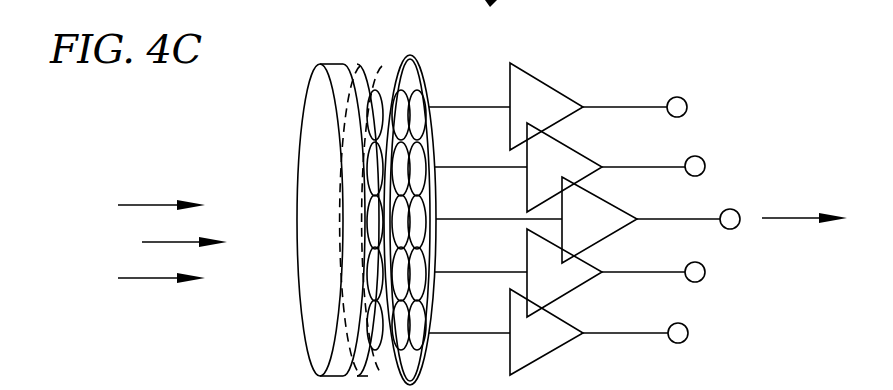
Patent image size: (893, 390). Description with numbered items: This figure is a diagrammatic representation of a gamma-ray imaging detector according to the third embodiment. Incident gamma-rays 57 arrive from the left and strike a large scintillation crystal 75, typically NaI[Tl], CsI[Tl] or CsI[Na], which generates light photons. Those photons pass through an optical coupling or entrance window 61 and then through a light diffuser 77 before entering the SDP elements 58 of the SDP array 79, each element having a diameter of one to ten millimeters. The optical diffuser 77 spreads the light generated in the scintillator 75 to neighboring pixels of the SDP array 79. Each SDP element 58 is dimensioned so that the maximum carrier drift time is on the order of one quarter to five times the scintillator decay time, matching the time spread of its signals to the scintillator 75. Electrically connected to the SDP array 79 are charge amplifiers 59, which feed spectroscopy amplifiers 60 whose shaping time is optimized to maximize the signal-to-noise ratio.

The incident gamma-rays 57 is at (157, 241).
The scintillation crystal 75 is at (258, 141).
The entrance window 61 is at (372, 57).
The light diffuser 77 is at (386, 47).
The SDP array 79 is at (458, 63).
The SDP elements 58 is at (410, 335).
The charge amplifiers 59 is at (537, 92).
The spectroscopy amplifiers 60 is at (792, 222).